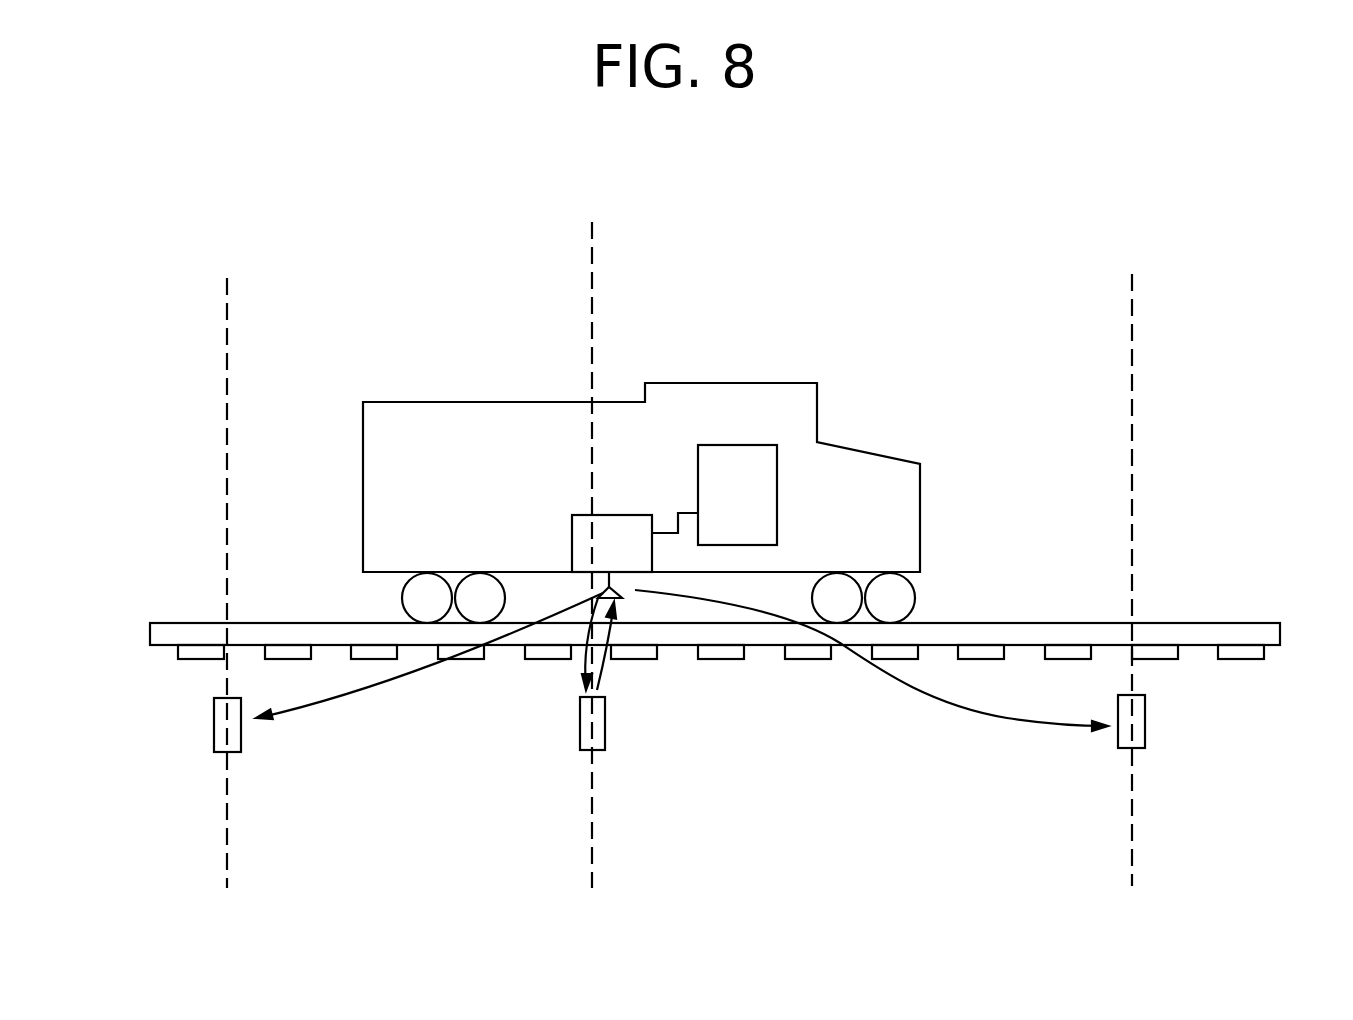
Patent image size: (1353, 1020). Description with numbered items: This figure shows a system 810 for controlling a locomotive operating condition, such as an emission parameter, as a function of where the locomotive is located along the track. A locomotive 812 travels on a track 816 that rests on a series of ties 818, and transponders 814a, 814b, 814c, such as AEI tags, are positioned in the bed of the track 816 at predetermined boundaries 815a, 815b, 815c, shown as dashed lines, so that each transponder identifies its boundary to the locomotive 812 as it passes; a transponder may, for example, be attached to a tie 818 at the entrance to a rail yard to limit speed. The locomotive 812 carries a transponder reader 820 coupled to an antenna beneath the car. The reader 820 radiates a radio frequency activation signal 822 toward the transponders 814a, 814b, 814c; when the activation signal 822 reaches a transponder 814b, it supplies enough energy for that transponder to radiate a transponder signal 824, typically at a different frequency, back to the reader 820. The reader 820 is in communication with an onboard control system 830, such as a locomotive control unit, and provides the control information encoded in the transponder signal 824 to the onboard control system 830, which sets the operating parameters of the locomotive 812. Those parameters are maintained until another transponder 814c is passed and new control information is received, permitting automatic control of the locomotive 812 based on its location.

The system 810 is at (610, 480).
The locomotive 812 is at (413, 402).
The transponder 814a is at (214, 725).
The transponder 814b is at (580, 723).
The transponder 814c is at (1145, 735).
The boundary 815a is at (227, 850).
The boundary 815b is at (593, 850).
The boundary 815c is at (1132, 850).
The track 816 is at (1180, 622).
The tie 818 is at (1170, 659).
The transponder reader 820 is at (588, 558).
The activation signal 822 is at (580, 663).
The transponder signal 824 is at (607, 675).
The onboard control system 830 is at (713, 510).